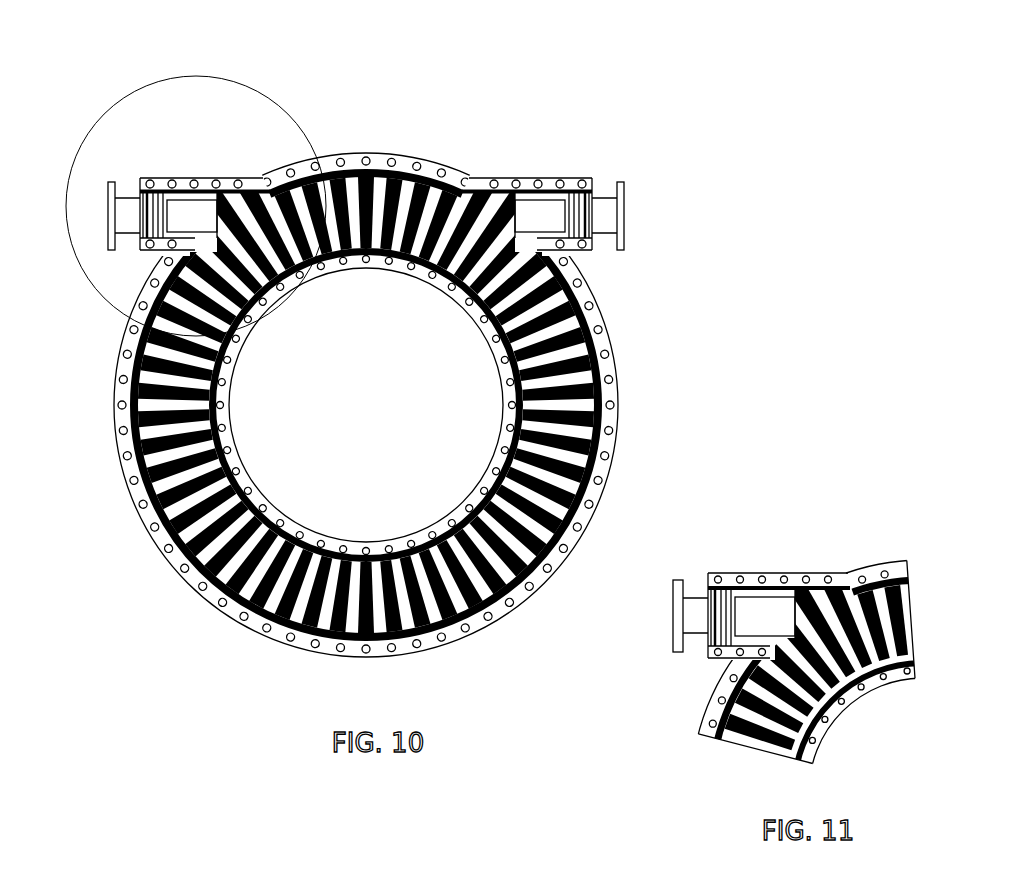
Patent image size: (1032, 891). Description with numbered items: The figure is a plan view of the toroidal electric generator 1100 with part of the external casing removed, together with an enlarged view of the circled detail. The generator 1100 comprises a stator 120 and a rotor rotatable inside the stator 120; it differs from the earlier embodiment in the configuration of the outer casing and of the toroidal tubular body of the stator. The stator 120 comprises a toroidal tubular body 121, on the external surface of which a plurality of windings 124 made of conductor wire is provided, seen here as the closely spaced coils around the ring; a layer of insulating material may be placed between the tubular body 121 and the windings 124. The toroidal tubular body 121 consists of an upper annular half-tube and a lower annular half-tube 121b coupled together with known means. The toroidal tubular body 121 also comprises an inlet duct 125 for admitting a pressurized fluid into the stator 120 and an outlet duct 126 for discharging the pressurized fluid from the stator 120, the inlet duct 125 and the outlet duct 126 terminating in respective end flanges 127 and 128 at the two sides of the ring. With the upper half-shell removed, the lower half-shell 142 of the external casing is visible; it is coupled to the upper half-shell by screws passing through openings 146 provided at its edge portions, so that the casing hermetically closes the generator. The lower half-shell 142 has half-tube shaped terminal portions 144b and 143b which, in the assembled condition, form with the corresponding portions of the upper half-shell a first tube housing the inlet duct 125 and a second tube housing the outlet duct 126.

In FIG. 10, the toroidal electric generator 1100 is at (377, 361).
In FIG. 10, the stator 120 is at (373, 351).
In FIG. 10, the toroidal tubular body 121 is at (598, 403).
In FIG. 10, the lower annular half-tube 121b is at (260, 608).
In FIG. 10, the windings 124 is at (153, 523).
In FIG. 11, the windings 124 is at (865, 685).
In FIG. 10, the inlet duct 125 is at (608, 215).
In FIG. 10, the outlet duct 126 is at (123, 225).
In FIG. 11, the outlet duct 126 is at (700, 622).
In FIG. 10, the end flange 127 is at (626, 210).
In FIG. 10, the end flange 128 is at (107, 212).
In FIG. 11, the end flange 128 is at (678, 618).
In FIG. 10, the lower half-shell 142 is at (613, 460).
In FIG. 10, the half-tube terminal portion 143b is at (530, 180).
In FIG. 10, the half-tube terminal portion 144b is at (205, 180).
In FIG. 11, the half-tube terminal portion 144b is at (794, 576).
In FIG. 10, the openings 146 is at (343, 550).